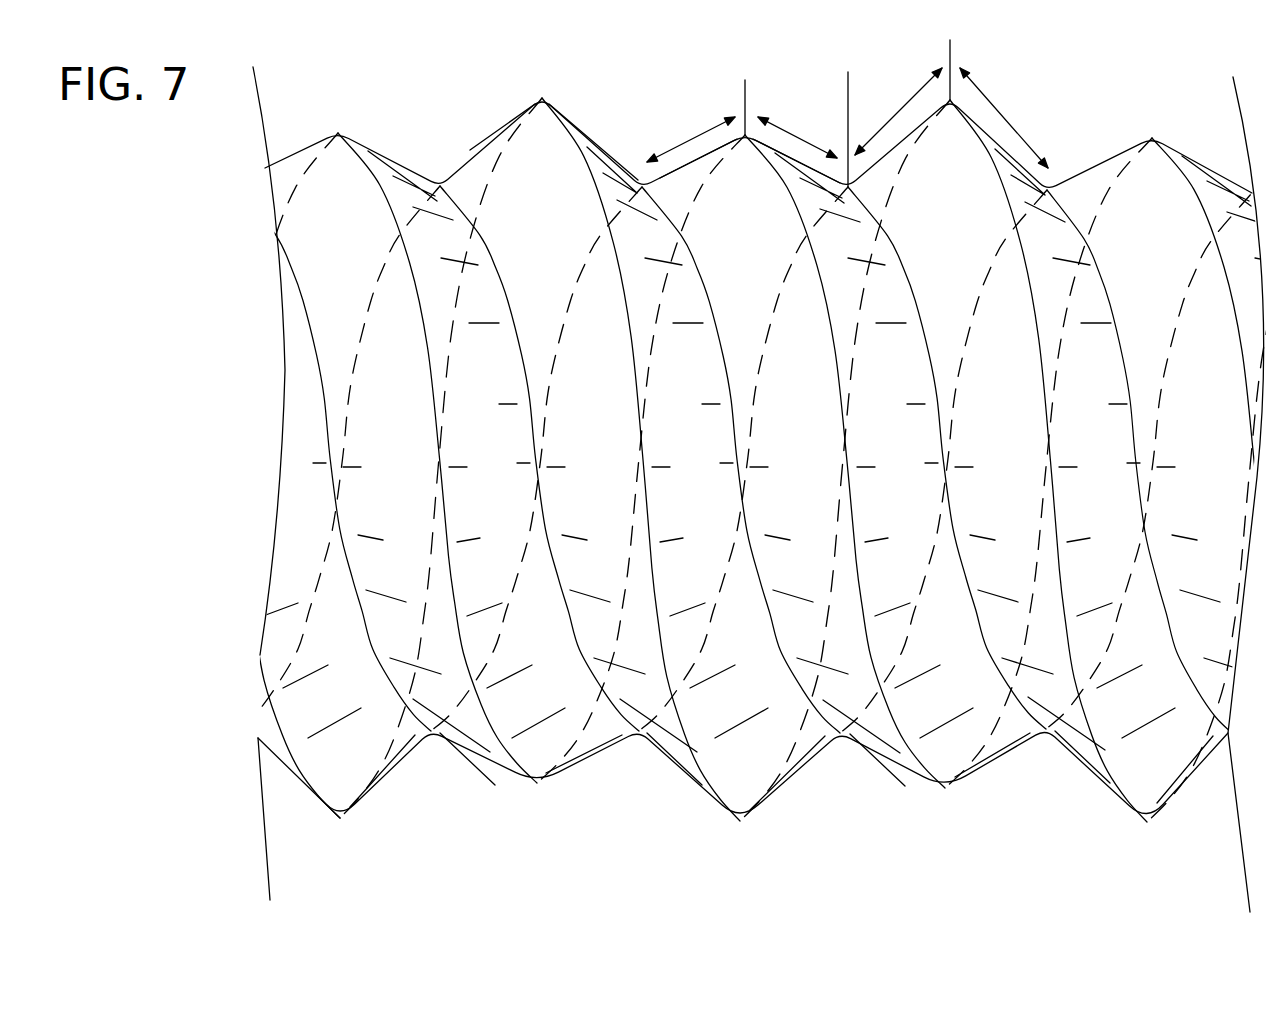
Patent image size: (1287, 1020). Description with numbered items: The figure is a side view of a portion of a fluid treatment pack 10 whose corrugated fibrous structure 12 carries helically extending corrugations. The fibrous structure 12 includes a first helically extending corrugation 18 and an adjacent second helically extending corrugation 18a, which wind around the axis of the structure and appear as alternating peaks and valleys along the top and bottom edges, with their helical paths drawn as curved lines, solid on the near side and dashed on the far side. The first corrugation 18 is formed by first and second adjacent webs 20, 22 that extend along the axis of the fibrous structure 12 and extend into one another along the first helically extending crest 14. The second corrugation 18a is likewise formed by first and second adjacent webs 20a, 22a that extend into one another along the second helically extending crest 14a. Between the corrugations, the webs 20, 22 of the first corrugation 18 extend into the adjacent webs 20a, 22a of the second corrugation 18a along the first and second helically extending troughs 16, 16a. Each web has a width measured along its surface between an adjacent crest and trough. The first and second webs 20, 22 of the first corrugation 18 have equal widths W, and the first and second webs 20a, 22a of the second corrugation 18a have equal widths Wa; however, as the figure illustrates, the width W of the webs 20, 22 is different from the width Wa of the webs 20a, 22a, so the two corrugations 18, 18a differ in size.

The fluid treatment pack 10 is at (945, 900).
The corrugated fibrous structure 12 is at (302, 165).
The first helically extending crest 14 is at (383, 183).
The second helically extending crest 14a is at (1047, 188).
The first helically extending trough 16 is at (574, 620).
The second helically extending trough 16a is at (785, 648).
The first helically extending corrugation 18 is at (497, 747).
The second helically extending corrugation 18a is at (703, 787).
The first web 20 is at (722, 137).
The second web 22 is at (767, 137).
The first web 20a is at (490, 140).
The second web 22a is at (597, 138).
The width W is at (747, 129).
The width Wa is at (951, 104).